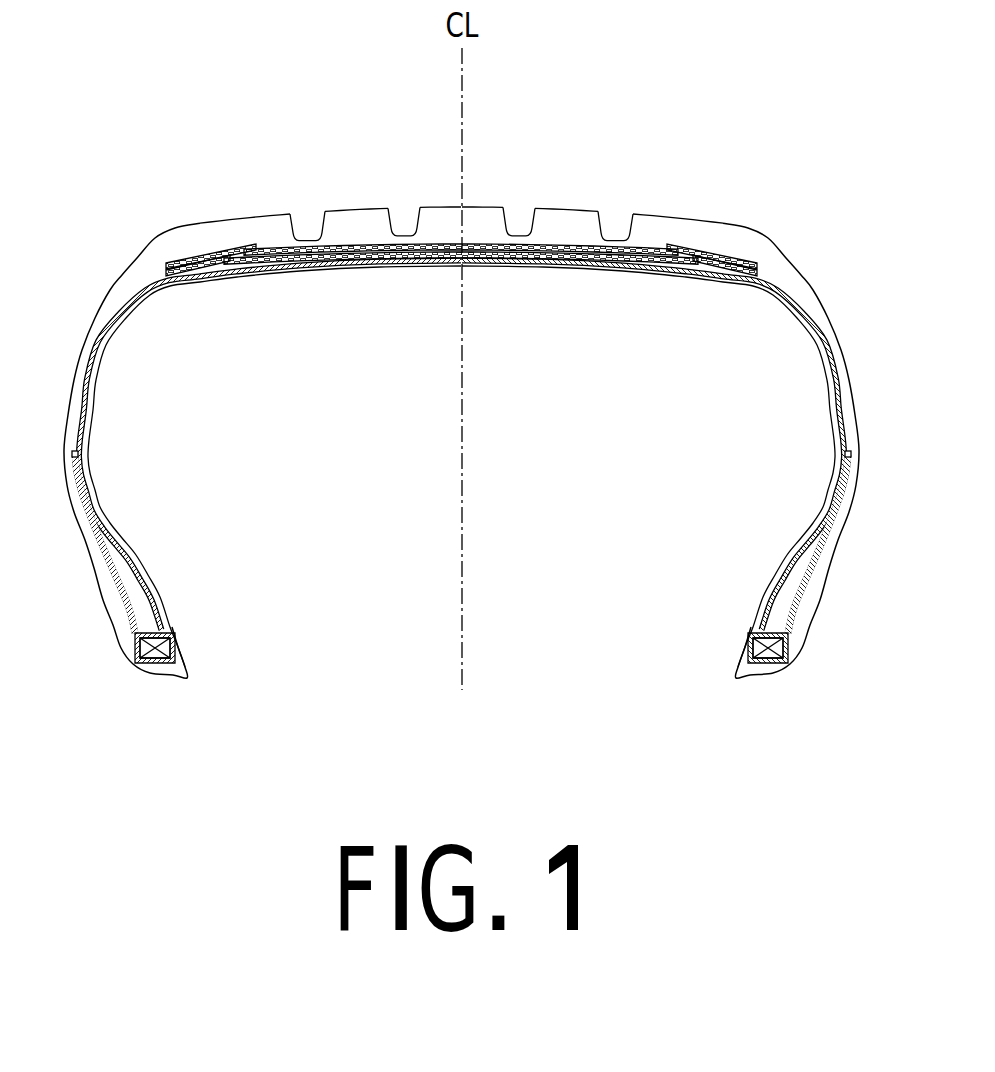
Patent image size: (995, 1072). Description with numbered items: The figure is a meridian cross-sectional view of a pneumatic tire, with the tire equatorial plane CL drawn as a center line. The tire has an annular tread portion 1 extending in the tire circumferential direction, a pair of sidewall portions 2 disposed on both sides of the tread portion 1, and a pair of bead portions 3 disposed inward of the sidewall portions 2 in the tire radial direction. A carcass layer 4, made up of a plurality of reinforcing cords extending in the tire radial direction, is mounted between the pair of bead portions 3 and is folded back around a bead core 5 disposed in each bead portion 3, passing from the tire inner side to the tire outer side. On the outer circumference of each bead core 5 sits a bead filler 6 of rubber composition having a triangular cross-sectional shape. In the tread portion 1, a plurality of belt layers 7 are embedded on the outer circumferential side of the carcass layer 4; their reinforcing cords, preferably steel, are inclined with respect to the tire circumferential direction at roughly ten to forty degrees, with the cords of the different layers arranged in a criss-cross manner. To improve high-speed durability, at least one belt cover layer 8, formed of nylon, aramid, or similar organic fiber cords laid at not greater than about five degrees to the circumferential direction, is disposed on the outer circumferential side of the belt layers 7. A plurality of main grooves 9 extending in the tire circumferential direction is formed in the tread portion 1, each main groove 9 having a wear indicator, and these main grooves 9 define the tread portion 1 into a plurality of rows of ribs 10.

The tread portion 1 is at (483, 188).
The sidewall portion 2 is at (61, 386).
The bead portion 3 is at (116, 648).
The carcass layer 4 is at (121, 328).
The bead core 5 is at (164, 648).
The bead filler 6 is at (150, 607).
The belt layer 7 is at (648, 262).
The belt cover layer 8 is at (228, 246).
The main groove 9 is at (317, 220).
The rib 10 is at (272, 217).